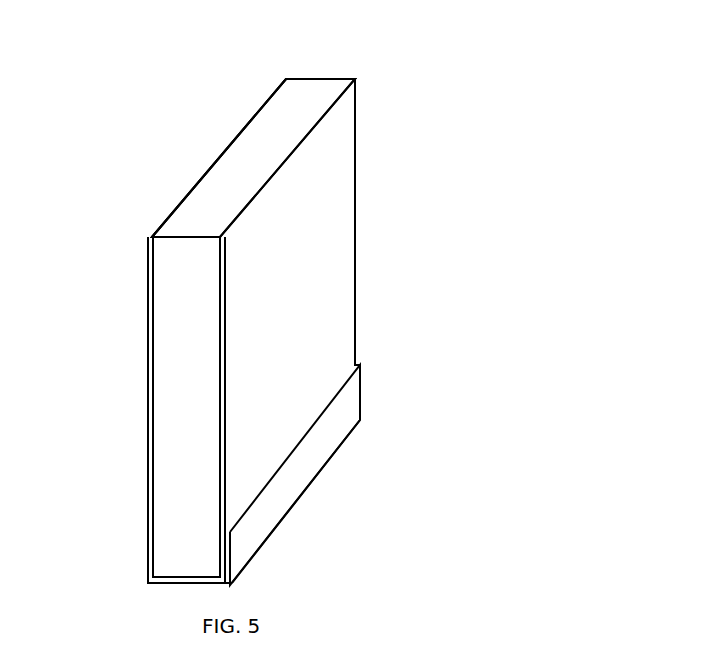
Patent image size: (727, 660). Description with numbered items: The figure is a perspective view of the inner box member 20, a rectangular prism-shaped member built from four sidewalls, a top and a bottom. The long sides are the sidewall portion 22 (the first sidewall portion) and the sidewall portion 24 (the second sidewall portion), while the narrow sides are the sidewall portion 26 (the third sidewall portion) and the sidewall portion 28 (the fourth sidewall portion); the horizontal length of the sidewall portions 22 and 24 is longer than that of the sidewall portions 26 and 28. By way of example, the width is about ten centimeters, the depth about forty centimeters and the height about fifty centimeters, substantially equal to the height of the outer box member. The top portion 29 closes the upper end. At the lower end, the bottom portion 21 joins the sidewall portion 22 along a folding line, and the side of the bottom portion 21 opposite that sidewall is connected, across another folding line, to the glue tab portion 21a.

The inner box member 20 is at (368, 54).
The bottom portion 21 is at (308, 507).
The glue tab portion 21a is at (315, 450).
The sidewall portion 22 is at (188, 175).
The sidewall portion 24 is at (307, 307).
The sidewall portion 26 is at (187, 388).
The sidewall portion 28 is at (366, 173).
The top portion 29 is at (243, 155).